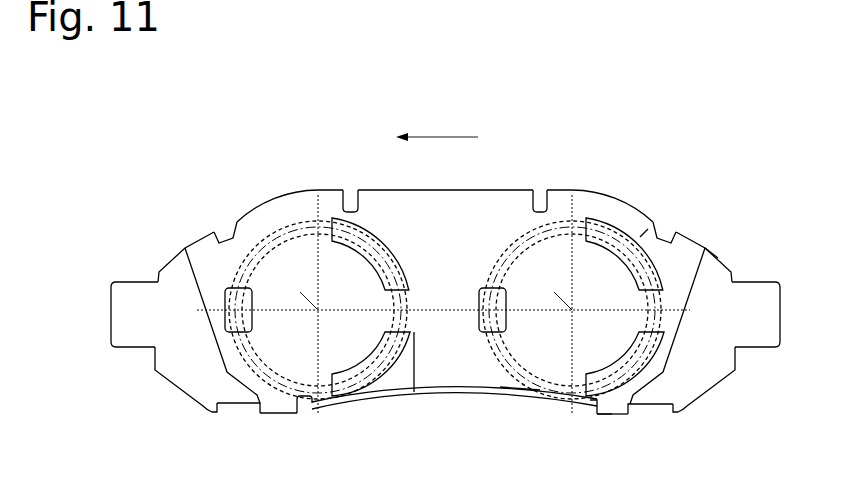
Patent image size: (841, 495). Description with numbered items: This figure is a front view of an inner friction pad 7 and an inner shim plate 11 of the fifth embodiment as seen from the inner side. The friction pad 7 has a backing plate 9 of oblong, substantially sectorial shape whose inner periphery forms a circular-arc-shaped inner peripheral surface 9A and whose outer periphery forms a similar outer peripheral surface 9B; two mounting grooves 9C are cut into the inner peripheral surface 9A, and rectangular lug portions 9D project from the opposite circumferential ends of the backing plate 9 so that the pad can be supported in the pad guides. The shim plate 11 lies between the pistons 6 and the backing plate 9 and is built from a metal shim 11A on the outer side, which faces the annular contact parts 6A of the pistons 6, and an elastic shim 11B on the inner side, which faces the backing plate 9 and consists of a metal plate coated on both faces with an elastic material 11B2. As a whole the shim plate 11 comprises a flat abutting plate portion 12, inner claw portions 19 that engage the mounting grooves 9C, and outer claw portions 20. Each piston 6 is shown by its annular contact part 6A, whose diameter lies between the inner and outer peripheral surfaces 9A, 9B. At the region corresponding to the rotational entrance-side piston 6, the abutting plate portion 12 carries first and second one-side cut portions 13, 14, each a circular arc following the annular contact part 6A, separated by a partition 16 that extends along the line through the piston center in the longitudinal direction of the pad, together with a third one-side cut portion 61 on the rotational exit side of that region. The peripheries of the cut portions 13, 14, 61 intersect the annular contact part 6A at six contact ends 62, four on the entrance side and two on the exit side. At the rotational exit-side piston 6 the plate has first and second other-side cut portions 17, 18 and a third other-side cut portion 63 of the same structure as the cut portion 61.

The shim plate 11 is at (498, 190).
The abutting plate portion 12 is at (477, 215).
The first one-side cut portion 13 is at (640, 237).
The second one-side cut portion 14 is at (615, 402).
The partition 16 is at (398, 330).
The first other-side cut portion 17 is at (352, 195).
The second other-side cut portion 18 is at (318, 402).
The inner claw portion 19 is at (278, 414).
The outer claw portion 20 is at (186, 247).
The piston 6 is at (263, 237).
The annular contact part 6A is at (292, 237).
The contact end 62 is at (336, 216).
The third other-side cut portion 63 is at (156, 357).
The friction pad 7 is at (723, 256).
The backing plate 9 is at (175, 368).
The inner peripheral surface 9A is at (442, 400).
The outer peripheral surface 9B is at (223, 235).
The mounting groove 9C is at (240, 405).
The lug portion 9D is at (121, 301).
The metal shim 11A is at (500, 402).
The elastic shim 11B is at (670, 410).
The elastic material 11B2 is at (402, 400).
The third one-side cut portion 61 is at (520, 400).